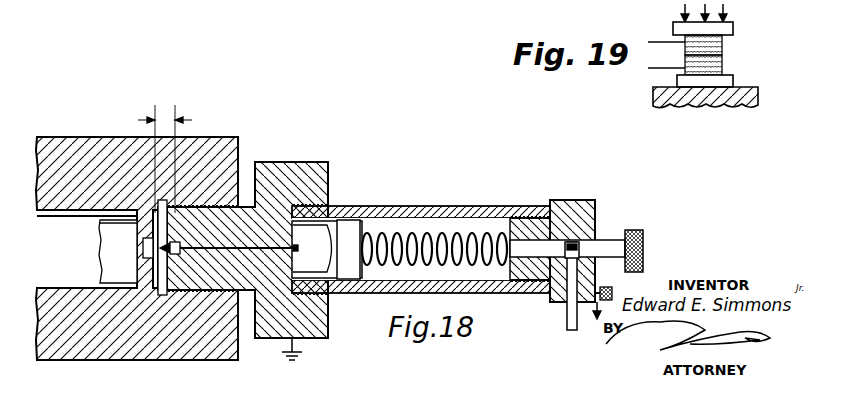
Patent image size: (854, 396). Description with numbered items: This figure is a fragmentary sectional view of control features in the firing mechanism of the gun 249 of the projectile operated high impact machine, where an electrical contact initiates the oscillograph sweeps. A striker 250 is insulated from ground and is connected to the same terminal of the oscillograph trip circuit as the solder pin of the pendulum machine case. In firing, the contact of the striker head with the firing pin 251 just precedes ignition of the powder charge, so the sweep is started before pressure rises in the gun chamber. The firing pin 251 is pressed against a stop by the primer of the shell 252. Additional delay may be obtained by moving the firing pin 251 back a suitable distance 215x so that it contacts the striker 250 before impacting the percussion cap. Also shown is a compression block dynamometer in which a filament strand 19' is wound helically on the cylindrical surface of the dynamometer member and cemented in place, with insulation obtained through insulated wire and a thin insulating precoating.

In FIG. 18, the gun 249 is at (91, 137).
In FIG. 18, the striker 250 is at (350, 232).
In FIG. 18, the firing pin 251 is at (332, 236).
In FIG. 18, the shell 252 is at (138, 229).
In FIG. 18, the distance 215x is at (177, 113).
In FIG. 19, the filament strand 19' is at (711, 45).